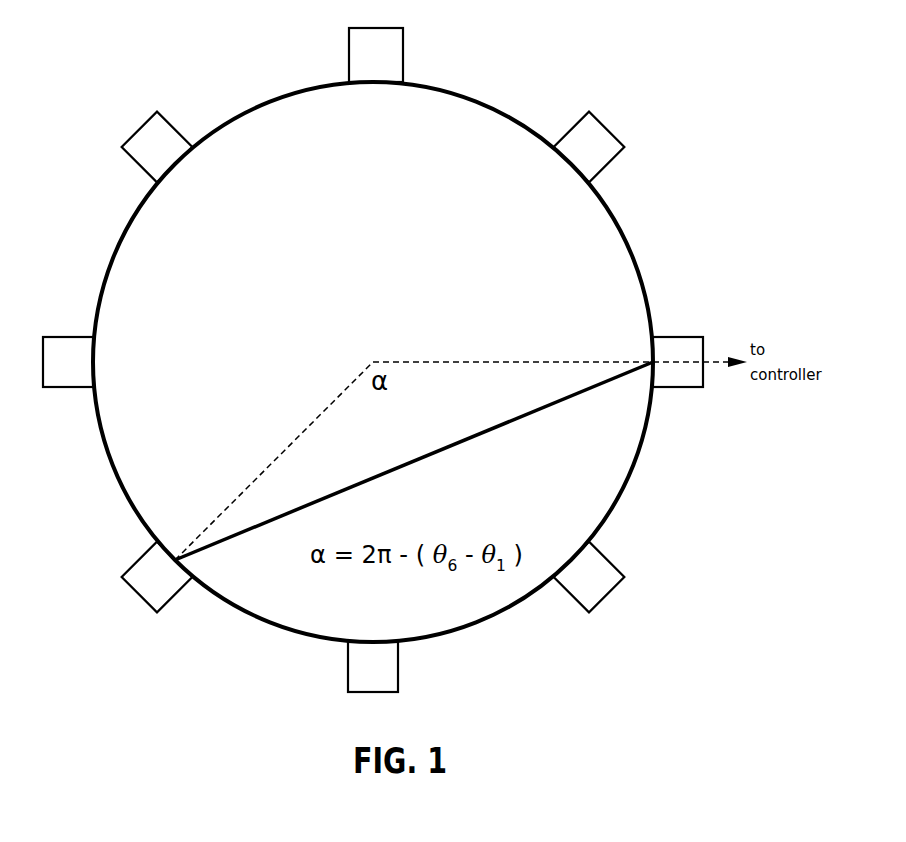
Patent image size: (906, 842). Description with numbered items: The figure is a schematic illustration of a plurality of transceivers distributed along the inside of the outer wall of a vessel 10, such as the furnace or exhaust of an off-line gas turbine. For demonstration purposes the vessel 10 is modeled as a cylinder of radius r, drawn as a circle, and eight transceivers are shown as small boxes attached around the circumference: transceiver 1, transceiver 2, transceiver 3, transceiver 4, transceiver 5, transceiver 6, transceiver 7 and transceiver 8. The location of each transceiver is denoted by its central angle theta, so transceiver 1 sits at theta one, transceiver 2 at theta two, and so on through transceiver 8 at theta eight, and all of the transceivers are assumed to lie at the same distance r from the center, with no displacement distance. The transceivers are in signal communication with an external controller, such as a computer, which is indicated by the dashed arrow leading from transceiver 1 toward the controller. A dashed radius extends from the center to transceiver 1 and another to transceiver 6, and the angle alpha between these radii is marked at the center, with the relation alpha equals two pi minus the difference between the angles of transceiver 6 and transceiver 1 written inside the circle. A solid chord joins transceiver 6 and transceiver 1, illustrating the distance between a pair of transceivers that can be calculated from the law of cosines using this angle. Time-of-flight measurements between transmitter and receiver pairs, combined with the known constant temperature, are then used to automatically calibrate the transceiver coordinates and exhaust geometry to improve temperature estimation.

The vessel 10 is at (482, 90).
The transceiver θ 1 is at (678, 363).
The transceiver θ 2 is at (589, 147).
The transceiver θ 3 is at (376, 56).
The transceiver θ 4 is at (157, 147).
The transceiver θ 5 is at (68, 363).
The transceiver θ 6 is at (157, 577).
The transceiver θ 7 is at (373, 668).
The transceiver θ 8 is at (589, 577).